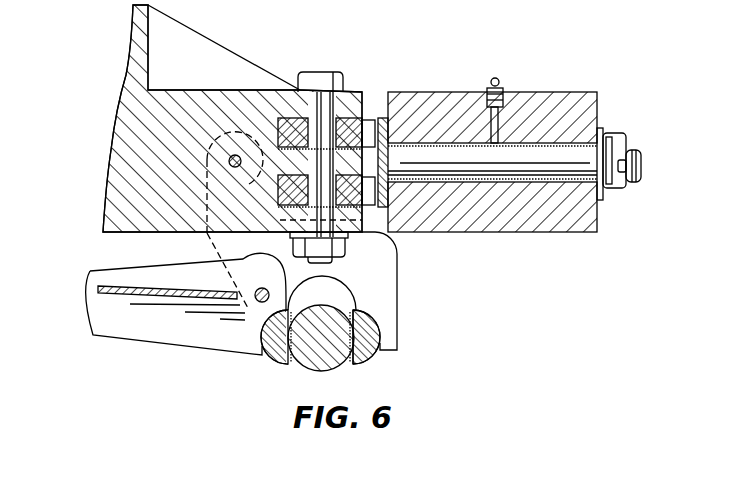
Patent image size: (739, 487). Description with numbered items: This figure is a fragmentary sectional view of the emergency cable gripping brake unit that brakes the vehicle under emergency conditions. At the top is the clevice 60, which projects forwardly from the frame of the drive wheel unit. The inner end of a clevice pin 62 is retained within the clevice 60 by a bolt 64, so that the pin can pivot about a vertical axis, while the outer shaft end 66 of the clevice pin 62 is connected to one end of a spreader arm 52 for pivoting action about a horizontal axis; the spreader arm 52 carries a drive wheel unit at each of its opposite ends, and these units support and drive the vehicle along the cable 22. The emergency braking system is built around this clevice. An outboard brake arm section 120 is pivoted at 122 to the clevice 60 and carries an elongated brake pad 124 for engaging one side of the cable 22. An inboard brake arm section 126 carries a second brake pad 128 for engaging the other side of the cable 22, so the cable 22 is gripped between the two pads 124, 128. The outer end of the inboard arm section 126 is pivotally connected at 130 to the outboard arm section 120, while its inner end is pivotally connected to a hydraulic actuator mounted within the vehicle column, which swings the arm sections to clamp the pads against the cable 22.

The clevice 60 is at (263, 97).
The bolt 64 is at (326, 76).
The clevice pin 62 is at (381, 118).
The spreader arm 52 is at (597, 110).
The outer shaft end 66 is at (514, 167).
The pivot 122 is at (229, 160).
The pivotal connection 130 is at (266, 287).
The outboard brake arm section 120 is at (390, 270).
The brake pad 124 is at (370, 353).
The cable 22 is at (330, 357).
The brake pad 128 is at (277, 358).
The inboard brake arm section 126 is at (183, 337).